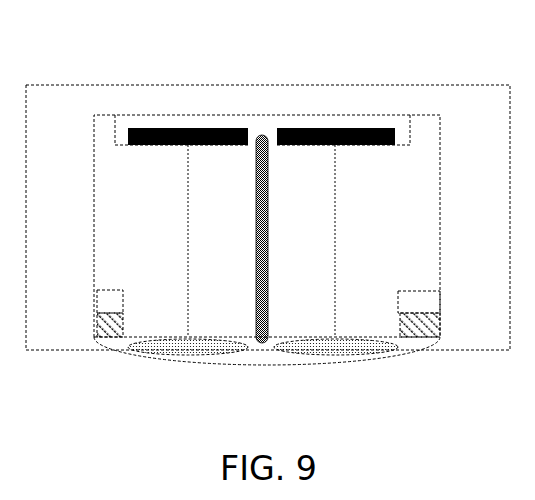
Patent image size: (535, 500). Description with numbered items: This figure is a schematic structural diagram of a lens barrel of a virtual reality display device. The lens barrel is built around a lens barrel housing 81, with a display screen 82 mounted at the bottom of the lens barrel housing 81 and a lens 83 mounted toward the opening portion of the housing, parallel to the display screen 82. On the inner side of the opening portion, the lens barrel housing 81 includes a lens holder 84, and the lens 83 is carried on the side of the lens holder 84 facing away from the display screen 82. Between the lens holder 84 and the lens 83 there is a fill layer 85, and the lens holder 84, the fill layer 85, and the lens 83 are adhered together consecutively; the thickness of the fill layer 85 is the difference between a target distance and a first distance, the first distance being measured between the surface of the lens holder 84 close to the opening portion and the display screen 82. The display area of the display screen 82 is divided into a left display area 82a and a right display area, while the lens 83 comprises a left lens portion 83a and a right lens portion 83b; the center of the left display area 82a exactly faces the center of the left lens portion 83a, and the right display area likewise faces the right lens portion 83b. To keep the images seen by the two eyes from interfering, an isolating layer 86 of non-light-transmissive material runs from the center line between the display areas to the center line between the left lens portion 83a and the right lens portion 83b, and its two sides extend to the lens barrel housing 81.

The lens barrel housing 81 is at (245, 97).
The display screen 82 is at (138, 115).
The left display area 82a is at (153, 138).
The lens 83 is at (265, 357).
The left lens portion 83a is at (173, 357).
The right lens portion 83b is at (343, 357).
The lens holder 84 is at (121, 305).
The fill layer 85 is at (397, 315).
The isolating layer 86 is at (268, 258).